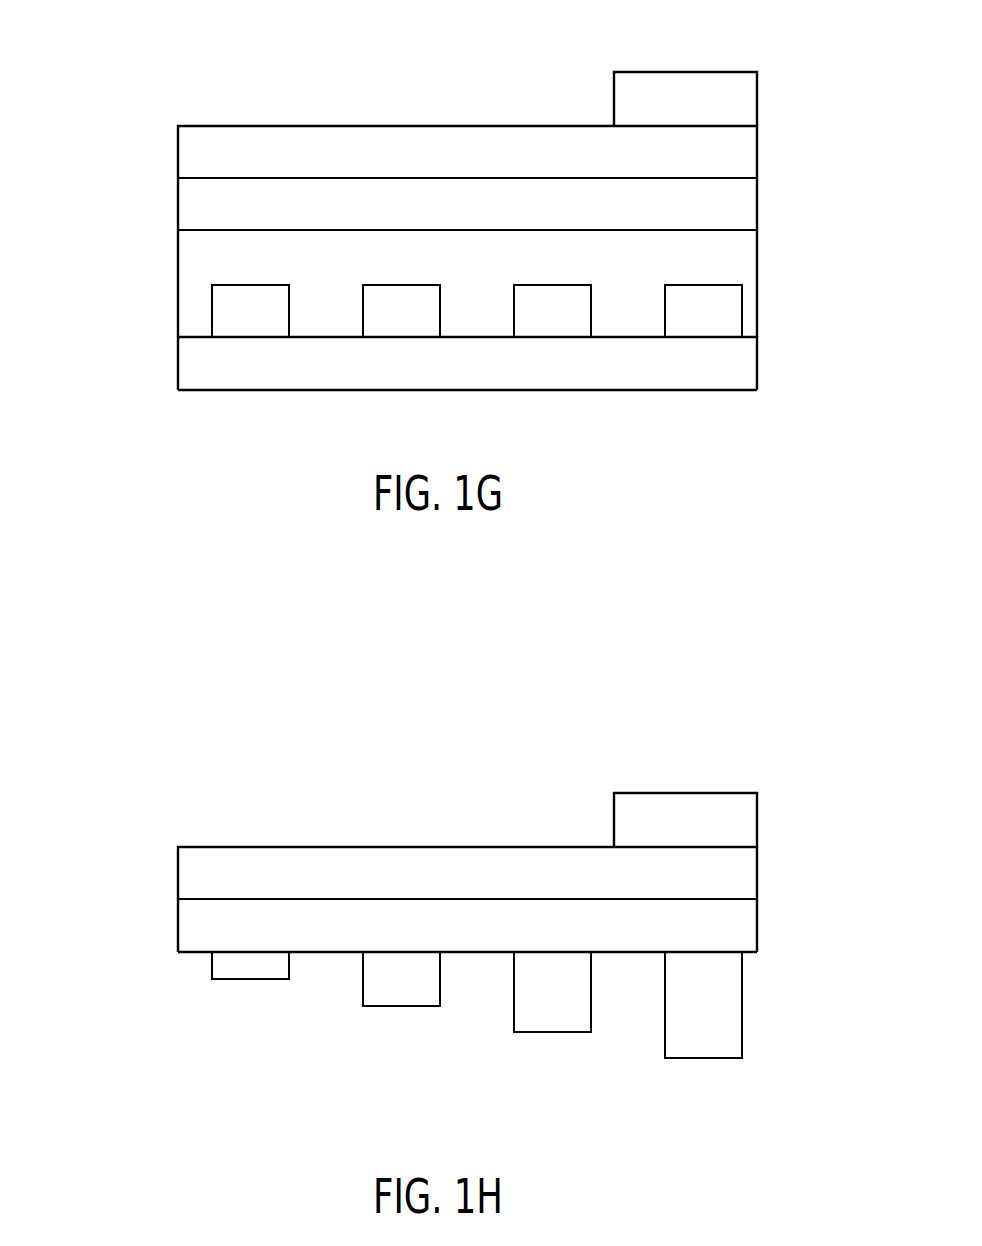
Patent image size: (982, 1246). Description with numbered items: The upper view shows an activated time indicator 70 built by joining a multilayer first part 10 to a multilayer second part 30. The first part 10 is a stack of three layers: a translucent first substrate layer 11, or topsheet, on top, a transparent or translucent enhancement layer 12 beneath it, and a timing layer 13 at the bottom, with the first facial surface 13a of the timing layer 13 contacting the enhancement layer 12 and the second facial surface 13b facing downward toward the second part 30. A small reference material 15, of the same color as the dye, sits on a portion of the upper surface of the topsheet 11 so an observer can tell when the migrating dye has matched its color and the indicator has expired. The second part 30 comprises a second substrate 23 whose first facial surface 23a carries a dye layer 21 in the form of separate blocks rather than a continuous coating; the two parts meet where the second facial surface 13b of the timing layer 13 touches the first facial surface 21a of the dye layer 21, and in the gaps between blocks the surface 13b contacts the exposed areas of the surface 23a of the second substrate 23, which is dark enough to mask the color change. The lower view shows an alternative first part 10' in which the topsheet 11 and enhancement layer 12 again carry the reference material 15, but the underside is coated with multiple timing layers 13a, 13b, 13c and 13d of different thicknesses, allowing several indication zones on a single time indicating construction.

In FIG. 1G, the activated time indicator 70 is at (724, 40).
In FIG. 1G, the multilayer first part 10 is at (399, 171).
In FIG. 1H, the first part coated with multiple timing layers 10' is at (504, 835).
In FIG. 1G, the first substrate layer 11 is at (178, 152).
In FIG. 1H, the first substrate layer 11 is at (178, 872).
In FIG. 1G, the enhancement layer 12 is at (178, 206).
In FIG. 1H, the enhancement layer 12 is at (178, 925).
In FIG. 1G, the timing layer 13 is at (178, 259).
In FIG. 1H, the first facial surface of timing layer 13a is at (250, 982).
In FIG. 1G, the second facial surface of timing layer 13b is at (687, 283).
In FIG. 1H, the second facial surface of timing layer 13b is at (400, 1009).
In FIG. 1H, the timing layer 13c is at (553, 1035).
In FIG. 1H, the timing layer 13d is at (703, 1061).
In FIG. 1G, the reference material 15 is at (614, 98).
In FIG. 1H, the reference material 15 is at (614, 818).
In FIG. 1G, the dye layer 21 is at (212, 310).
In FIG. 1G, the first facial surface of dye layer 21a is at (707, 288).
In FIG. 1G, the second substrate 23 is at (178, 362).
In FIG. 1G, the first facial surface of second substrate 23a is at (752, 340).
In FIG. 1G, the multilayer second part 30 is at (86, 270).